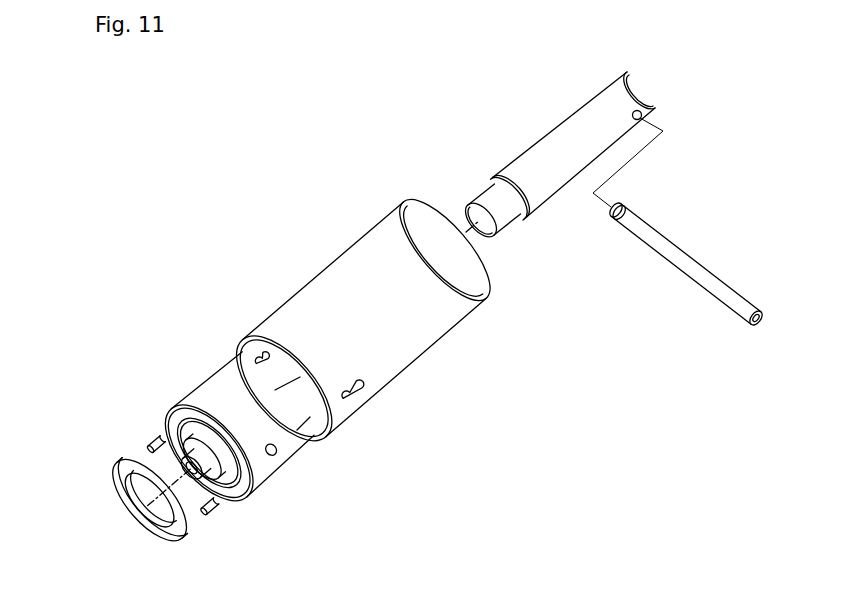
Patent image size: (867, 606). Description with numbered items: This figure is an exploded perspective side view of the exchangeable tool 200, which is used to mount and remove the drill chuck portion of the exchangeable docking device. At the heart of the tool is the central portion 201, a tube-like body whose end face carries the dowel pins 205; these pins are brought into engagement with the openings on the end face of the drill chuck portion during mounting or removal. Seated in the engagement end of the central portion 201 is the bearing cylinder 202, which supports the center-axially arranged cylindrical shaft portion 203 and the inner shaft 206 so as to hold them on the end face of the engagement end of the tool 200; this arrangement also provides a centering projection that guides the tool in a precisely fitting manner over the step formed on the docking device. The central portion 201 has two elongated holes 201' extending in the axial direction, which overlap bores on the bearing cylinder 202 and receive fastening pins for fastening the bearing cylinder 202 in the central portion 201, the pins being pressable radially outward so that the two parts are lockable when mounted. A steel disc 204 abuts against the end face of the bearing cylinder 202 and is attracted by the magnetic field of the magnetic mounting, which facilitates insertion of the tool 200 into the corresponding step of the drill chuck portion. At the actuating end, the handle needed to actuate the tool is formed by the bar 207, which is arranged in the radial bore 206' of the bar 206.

The exchangeable tool 200 is at (366, 184).
The central portion 201 is at (374, 322).
The elongated holes 201' is at (391, 412).
The bearing cylinder 202 is at (273, 462).
The cylindrical shaft portion 203 is at (178, 413).
The steel disc 204 is at (190, 517).
The dowel pins 205 is at (147, 440).
The inner shaft 206 is at (557, 144).
The radial bore 206' is at (688, 131).
The bar 207 is at (677, 262).